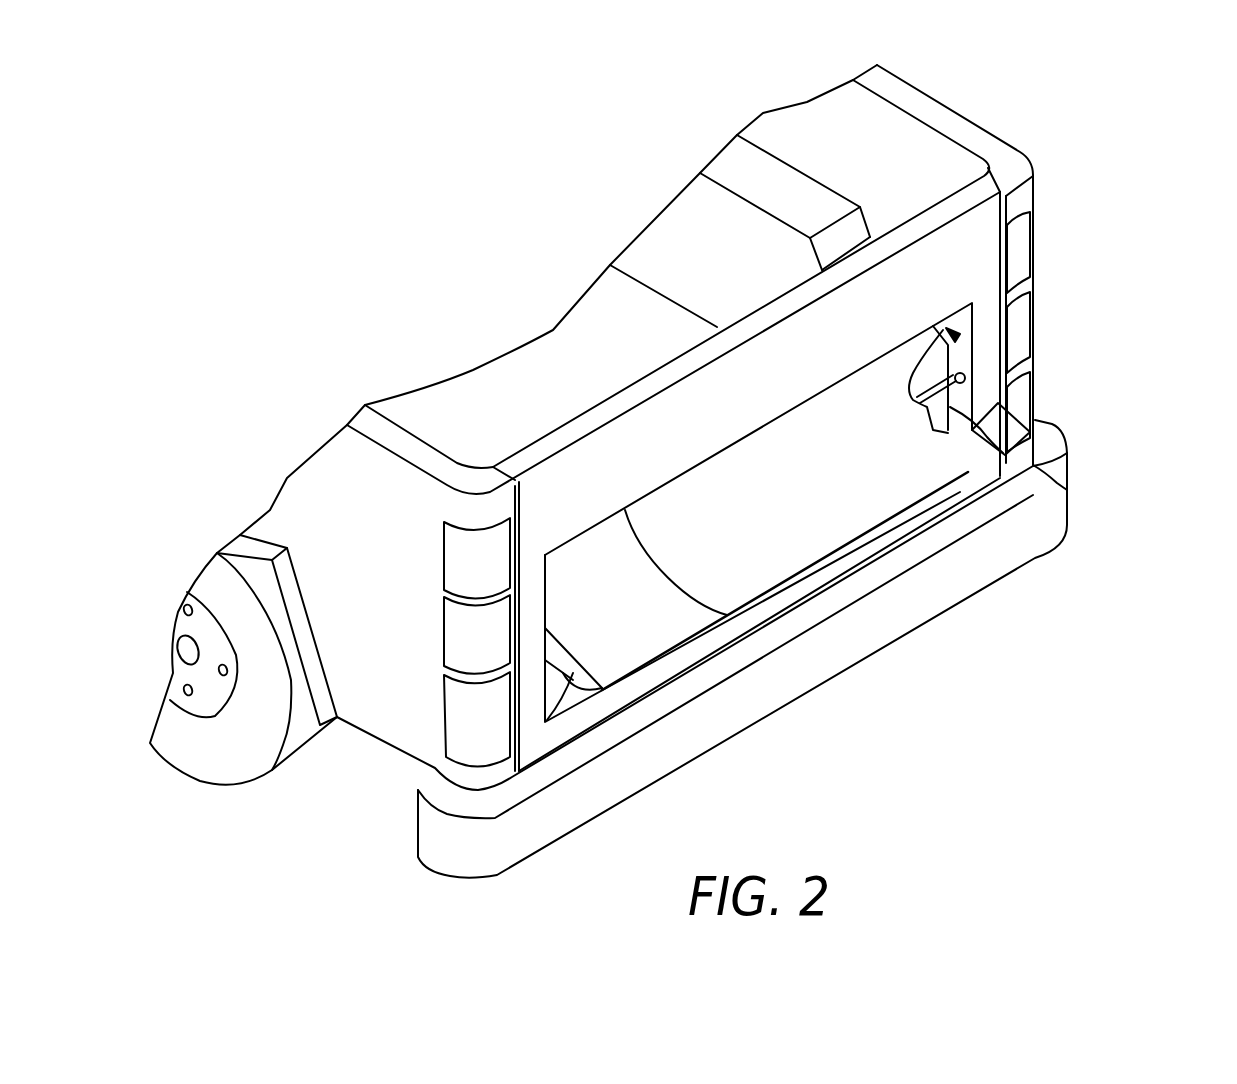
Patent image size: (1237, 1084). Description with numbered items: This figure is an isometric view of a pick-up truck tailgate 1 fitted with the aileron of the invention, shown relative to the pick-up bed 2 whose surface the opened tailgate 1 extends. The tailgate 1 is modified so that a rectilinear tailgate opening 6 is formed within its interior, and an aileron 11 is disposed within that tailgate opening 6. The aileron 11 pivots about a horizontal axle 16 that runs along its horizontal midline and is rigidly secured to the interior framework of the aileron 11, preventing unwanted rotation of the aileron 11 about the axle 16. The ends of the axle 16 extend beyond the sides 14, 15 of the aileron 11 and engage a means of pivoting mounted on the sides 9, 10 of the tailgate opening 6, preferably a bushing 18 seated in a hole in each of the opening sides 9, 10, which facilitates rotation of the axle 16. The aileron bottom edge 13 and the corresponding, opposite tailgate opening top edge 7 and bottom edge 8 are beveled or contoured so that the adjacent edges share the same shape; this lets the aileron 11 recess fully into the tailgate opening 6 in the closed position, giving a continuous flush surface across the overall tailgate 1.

The tailgate 1 is at (975, 250).
The pick-up bed 2 is at (558, 385).
The tailgate opening 6 is at (957, 338).
The tailgate opening top edge 7 is at (757, 632).
The tailgate opening bottom edge 8 is at (570, 715).
The side of tailgate opening 9 is at (965, 323).
The side of tailgate opening 10 is at (548, 686).
The aileron 11 is at (757, 540).
The aileron bottom edge 13 is at (1005, 500).
The side of aileron 14 is at (1003, 424).
The side of aileron 15 is at (575, 713).
The axle 16 is at (1012, 478).
The bushing 18 is at (965, 385).